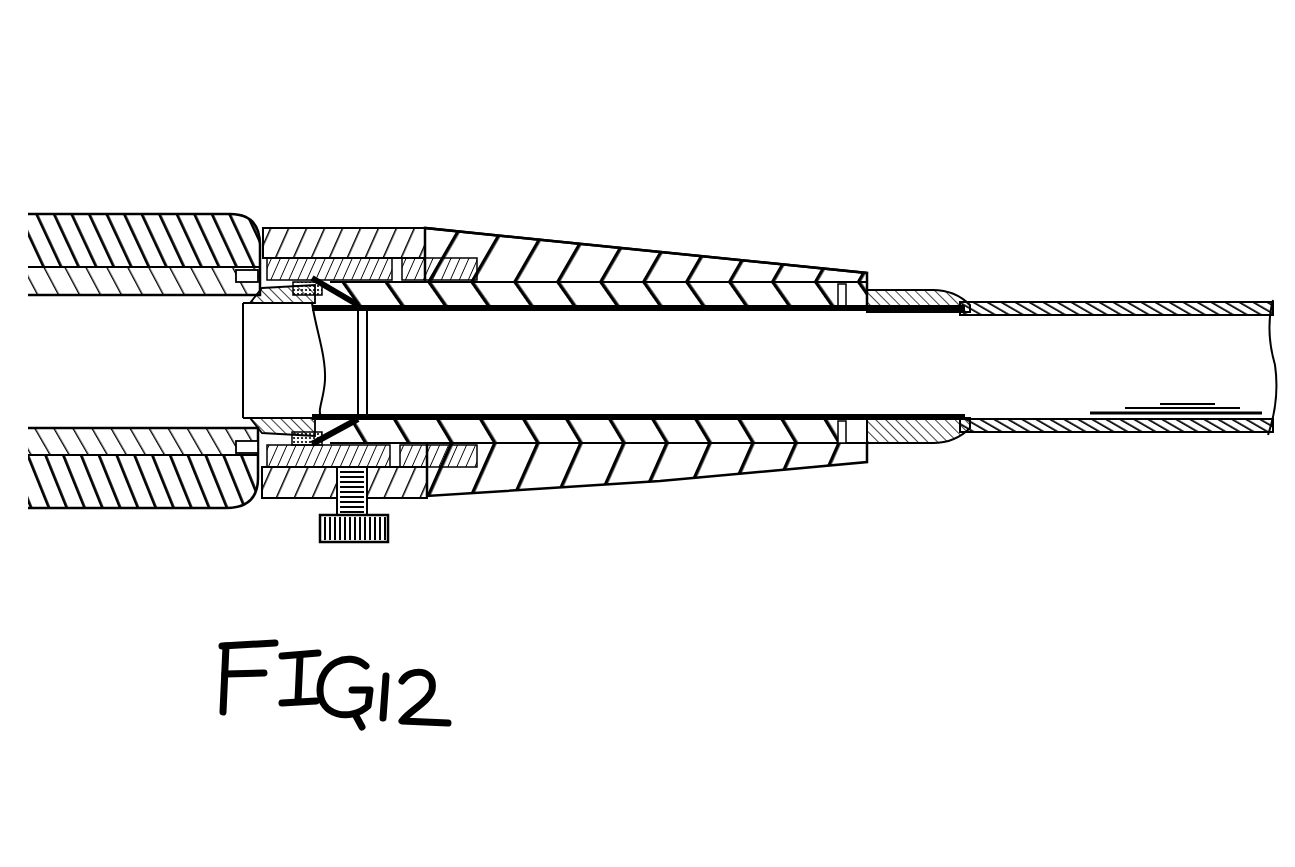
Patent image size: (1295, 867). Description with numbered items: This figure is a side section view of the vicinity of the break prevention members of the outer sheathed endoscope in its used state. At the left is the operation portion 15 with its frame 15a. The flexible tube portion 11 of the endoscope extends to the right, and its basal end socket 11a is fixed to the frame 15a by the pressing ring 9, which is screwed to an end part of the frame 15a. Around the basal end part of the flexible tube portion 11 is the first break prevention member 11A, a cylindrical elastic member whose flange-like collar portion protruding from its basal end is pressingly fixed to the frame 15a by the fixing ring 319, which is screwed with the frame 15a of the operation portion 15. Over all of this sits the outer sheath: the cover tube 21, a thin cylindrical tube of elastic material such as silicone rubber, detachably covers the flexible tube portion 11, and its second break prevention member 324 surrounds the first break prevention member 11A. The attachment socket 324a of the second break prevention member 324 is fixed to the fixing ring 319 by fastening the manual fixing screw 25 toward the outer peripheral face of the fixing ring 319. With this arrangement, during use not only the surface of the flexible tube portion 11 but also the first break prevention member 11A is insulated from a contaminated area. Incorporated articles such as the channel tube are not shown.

The operation portion 15 is at (50, 204).
The frame 15a is at (70, 437).
The pressing ring 9 is at (316, 228).
The fixing ring 319 is at (370, 228).
The first break prevention member 11A is at (676, 283).
The cover tube 21 is at (1133, 303).
The basal end socket 11a is at (262, 306).
The flexible tube portion 11 is at (1038, 405).
The manual fixing screw 25 is at (322, 522).
The attachment socket 324a is at (410, 487).
The second break prevention member 324 is at (632, 476).